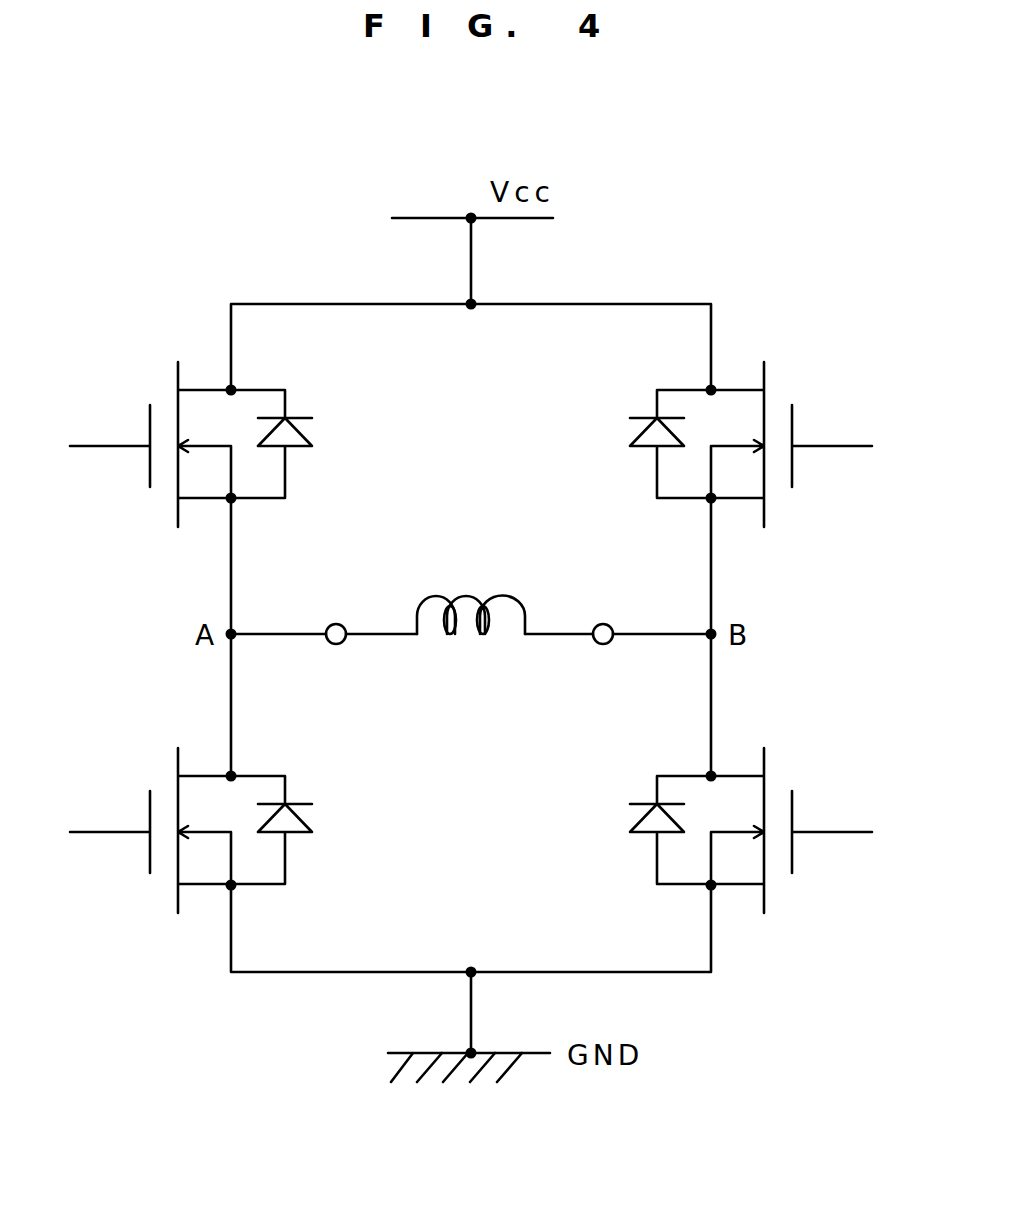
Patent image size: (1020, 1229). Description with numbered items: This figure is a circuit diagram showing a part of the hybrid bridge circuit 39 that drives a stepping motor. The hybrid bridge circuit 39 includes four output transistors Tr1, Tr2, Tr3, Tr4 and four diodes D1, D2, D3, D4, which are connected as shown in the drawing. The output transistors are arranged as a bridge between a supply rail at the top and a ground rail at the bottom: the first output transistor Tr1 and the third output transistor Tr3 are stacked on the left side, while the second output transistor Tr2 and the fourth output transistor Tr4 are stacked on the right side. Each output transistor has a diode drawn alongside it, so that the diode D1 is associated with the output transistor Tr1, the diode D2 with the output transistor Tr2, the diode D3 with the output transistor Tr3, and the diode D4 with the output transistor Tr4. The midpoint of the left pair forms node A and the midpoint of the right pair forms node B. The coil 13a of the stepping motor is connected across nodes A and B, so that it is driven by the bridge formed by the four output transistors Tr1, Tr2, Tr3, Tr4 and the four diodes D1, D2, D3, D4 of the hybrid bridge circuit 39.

The hybrid bridge circuit 39 is at (834, 154).
The coil 13a is at (472, 655).
The output transistor Tr1 is at (153, 505).
The output transistor Tr2 is at (795, 393).
The output transistor Tr3 is at (152, 905).
The output transistor Tr4 is at (797, 893).
The diode D1 is at (323, 440).
The diode D2 is at (619, 440).
The diode D3 is at (320, 822).
The diode D4 is at (617, 816).